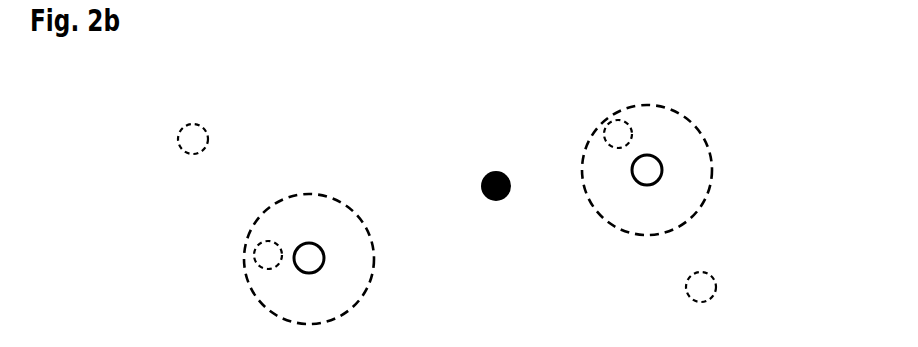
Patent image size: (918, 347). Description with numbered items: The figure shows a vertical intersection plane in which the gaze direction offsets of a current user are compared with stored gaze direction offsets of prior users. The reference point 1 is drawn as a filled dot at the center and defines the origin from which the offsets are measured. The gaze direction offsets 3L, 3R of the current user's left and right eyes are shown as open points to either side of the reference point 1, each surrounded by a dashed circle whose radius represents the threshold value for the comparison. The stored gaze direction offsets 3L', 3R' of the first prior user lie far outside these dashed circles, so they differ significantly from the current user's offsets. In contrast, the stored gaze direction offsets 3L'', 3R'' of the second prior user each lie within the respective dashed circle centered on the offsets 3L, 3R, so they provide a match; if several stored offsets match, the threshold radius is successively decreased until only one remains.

The reference point 1 is at (495, 172).
The gaze direction offset of the left eye 3L is at (308, 225).
The stored gaze direction offset of the left eye of the first prior user 3L' is at (138, 120).
The stored gaze direction offset of the left eye of the second prior user 3L'' is at (217, 270).
The gaze direction offset of the right eye 3R is at (691, 160).
The stored gaze direction offset of the right eye of the first prior user 3R' is at (751, 265).
The stored gaze direction offset of the right eye of the second prior user 3R'' is at (586, 100).